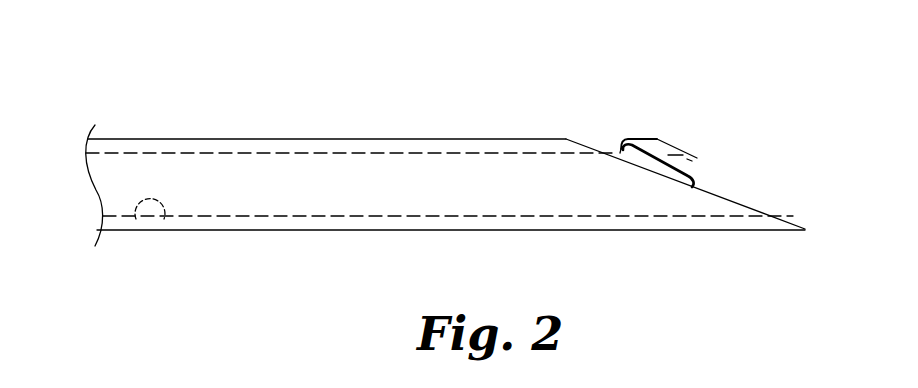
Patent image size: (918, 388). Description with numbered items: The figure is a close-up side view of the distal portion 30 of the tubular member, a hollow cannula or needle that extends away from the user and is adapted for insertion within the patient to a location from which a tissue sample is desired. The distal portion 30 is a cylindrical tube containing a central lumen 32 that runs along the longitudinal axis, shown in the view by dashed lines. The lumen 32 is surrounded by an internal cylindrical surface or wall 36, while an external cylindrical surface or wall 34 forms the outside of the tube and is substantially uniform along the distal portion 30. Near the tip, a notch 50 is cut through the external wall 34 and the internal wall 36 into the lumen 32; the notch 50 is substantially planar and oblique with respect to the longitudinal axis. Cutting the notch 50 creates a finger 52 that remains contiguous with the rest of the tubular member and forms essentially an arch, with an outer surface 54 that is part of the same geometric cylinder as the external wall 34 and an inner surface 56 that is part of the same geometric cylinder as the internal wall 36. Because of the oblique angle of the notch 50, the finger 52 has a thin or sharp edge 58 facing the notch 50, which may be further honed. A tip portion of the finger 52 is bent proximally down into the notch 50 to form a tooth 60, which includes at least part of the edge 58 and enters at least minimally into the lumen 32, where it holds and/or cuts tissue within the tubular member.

The distal portion 30 is at (443, 121).
The central lumen 32 is at (352, 187).
The external cylindrical surface or wall 34 is at (192, 139).
The internal cylindrical surface or wall 36 is at (158, 231).
The notch 50 is at (648, 162).
The finger 52 is at (638, 127).
The outer surface 54 is at (659, 138).
The inner surface 56 is at (700, 157).
The edge 58 is at (620, 148).
The tooth 60 is at (622, 154).